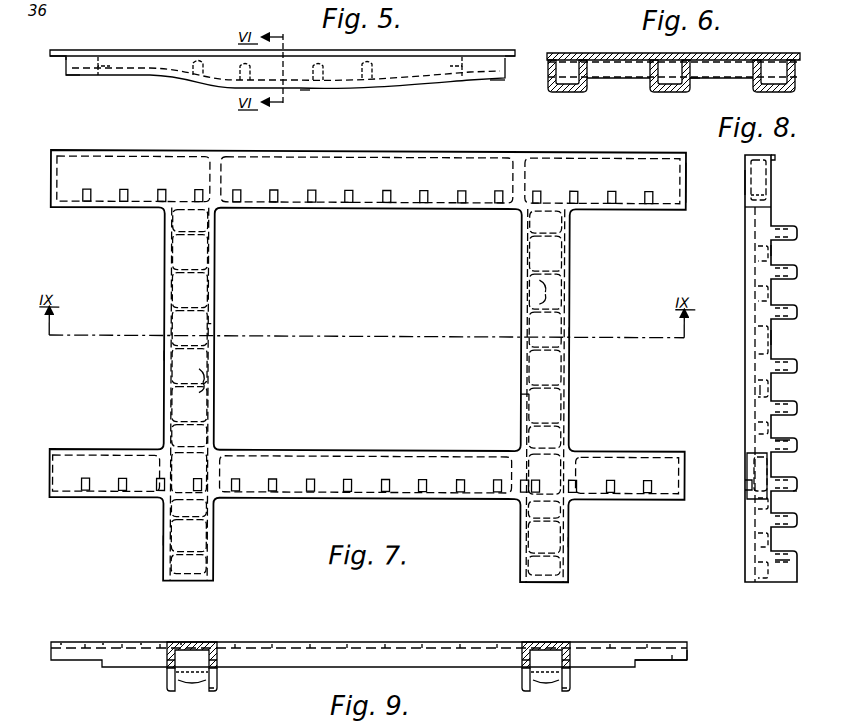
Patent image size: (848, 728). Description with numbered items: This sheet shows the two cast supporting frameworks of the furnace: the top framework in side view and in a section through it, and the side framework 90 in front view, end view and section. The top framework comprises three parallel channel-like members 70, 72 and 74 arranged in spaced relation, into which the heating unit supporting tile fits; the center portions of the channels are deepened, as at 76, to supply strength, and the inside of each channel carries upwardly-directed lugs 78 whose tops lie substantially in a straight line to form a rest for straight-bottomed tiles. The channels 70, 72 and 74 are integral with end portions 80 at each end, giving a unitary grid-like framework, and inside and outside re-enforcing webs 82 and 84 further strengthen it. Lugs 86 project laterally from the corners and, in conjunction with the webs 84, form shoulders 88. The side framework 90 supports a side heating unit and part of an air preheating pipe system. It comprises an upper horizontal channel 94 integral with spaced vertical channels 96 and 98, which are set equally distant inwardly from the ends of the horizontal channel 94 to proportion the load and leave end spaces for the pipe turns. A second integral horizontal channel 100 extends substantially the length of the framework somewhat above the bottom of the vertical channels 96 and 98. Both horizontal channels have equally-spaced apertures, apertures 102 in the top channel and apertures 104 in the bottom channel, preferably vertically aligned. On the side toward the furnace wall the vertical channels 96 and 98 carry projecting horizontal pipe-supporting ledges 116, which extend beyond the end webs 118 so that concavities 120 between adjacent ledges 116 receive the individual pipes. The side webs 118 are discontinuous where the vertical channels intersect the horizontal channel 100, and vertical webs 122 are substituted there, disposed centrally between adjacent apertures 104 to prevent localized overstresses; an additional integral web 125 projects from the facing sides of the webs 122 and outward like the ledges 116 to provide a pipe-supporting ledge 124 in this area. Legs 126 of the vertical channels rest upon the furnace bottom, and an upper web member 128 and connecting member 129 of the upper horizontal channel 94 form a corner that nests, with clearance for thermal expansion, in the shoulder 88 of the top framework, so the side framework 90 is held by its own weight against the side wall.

In FIG. 5, the channel-like member 70 is at (182, 75).
In FIG. 6, the channel-like member 70 is at (580, 90).
In FIG. 6, the channel-like member 72 is at (690, 90).
In FIG. 6, the channel-like member 74 is at (786, 92).
In FIG. 5, the deepened center portion 76 is at (305, 90).
In FIG. 5, the upwardly-directed lug 78 is at (196, 60).
In FIG. 6, the upwardly-directed lug 78 is at (566, 80).
In FIG. 5, the end portion 80 is at (102, 62).
In FIG. 5, the inside re-enforcing web 82 is at (98, 76).
In FIG. 5, the outside re-enforcing web 84 is at (70, 77).
In FIG. 5, the lug 86 is at (50, 52).
In FIG. 5, the shoulder 88 is at (62, 58).
In FIG. 6, the shoulder 88 is at (668, 46).
In FIG. 7, the side framework 90 is at (602, 210).
In FIG. 8, the side framework 90 is at (735, 305).
In FIG. 9, the side framework 90 is at (482, 627).
In FIG. 7, the upper horizontal channel 94 is at (396, 160).
In FIG. 8, the upper horizontal channel 94 is at (772, 182).
In FIG. 9, the upper horizontal channel 94 is at (354, 654).
In FIG. 7, the vertical channel 96 is at (218, 290).
In FIG. 9, the vertical channel 96 is at (214, 648).
In FIG. 7, the vertical channel 98 is at (558, 296).
In FIG. 8, the vertical channel 98 is at (762, 330).
In FIG. 9, the vertical channel 98 is at (570, 648).
In FIG. 7, the second horizontal channel 100 is at (683, 474).
In FIG. 8, the second horizontal channel 100 is at (742, 470).
In FIG. 9, the second horizontal channel 100 is at (652, 654).
In FIG. 7, the aperture 102 is at (272, 190).
In FIG. 8, the aperture 102 is at (752, 195).
In FIG. 7, the aperture 104 is at (352, 486).
In FIG. 8, the aperture 104 is at (748, 486).
In FIG. 9, the aperture 104 is at (396, 646).
In FIG. 7, the pipe-supporting ledge 116 is at (540, 300).
In FIG. 8, the pipe-supporting ledge 116 is at (797, 232).
In FIG. 9, the pipe-supporting ledge 116 is at (190, 676).
In FIG. 7, the end web 118 is at (166, 354).
In FIG. 8, the end web 118 is at (760, 392).
In FIG. 9, the end web 118 is at (176, 658).
In FIG. 7, the concavity 120 is at (212, 324).
In FIG. 8, the concavity 120 is at (774, 256).
In FIG. 9, the concavity 120 is at (212, 680).
In FIG. 7, the vertical web 122 is at (226, 464).
In FIG. 8, the vertical web 122 is at (772, 478).
In FIG. 8, the pipe-supporting ledge 124 is at (790, 491).
In FIG. 7, the additional integral web 125 is at (524, 492).
In FIG. 7, the leg 126 is at (572, 582).
In FIG. 8, the leg 126 is at (776, 436).
In FIG. 7, the upper web member 128 is at (610, 158).
In FIG. 8, the upper web member 128 is at (760, 156).
In FIG. 9, the upper web member 128 is at (673, 662).
In FIG. 7, the connecting member 129 is at (688, 188).
In FIG. 8, the connecting member 129 is at (746, 182).
In FIG. 9, the connecting member 129 is at (688, 660).